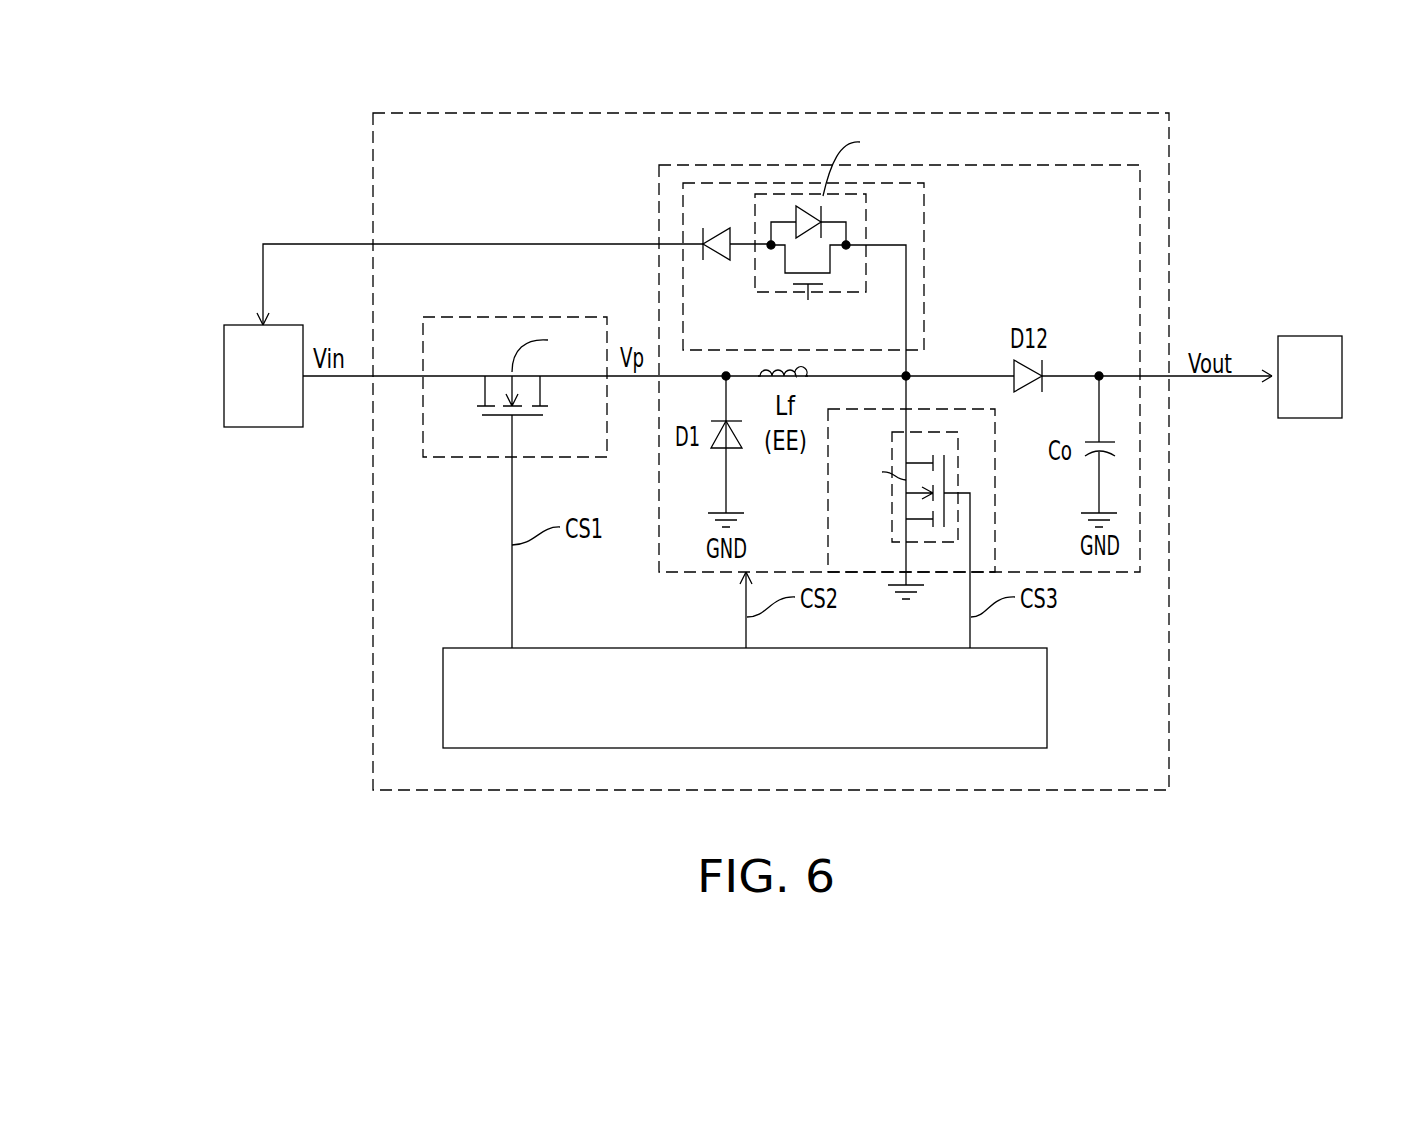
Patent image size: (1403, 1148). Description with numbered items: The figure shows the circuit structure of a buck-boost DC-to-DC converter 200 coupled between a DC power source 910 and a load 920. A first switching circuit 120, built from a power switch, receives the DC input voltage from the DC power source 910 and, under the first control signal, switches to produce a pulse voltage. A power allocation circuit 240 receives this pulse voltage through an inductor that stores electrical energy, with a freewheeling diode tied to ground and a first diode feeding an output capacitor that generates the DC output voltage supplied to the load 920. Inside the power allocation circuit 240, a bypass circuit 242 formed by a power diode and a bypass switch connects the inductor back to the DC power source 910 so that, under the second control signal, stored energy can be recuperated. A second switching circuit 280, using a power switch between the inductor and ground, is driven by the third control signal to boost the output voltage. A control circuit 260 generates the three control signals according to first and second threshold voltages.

The first switching circuit 120 is at (553, 317).
The DC-to-DC converter 200 is at (1040, 790).
The power allocation circuit 240 is at (1005, 165).
The bypass circuit 242 is at (926, 257).
The control circuit 260 is at (1047, 690).
The second switching circuit 280 is at (891, 500).
The DC power source 910 is at (263, 427).
The load 920 is at (1312, 418).